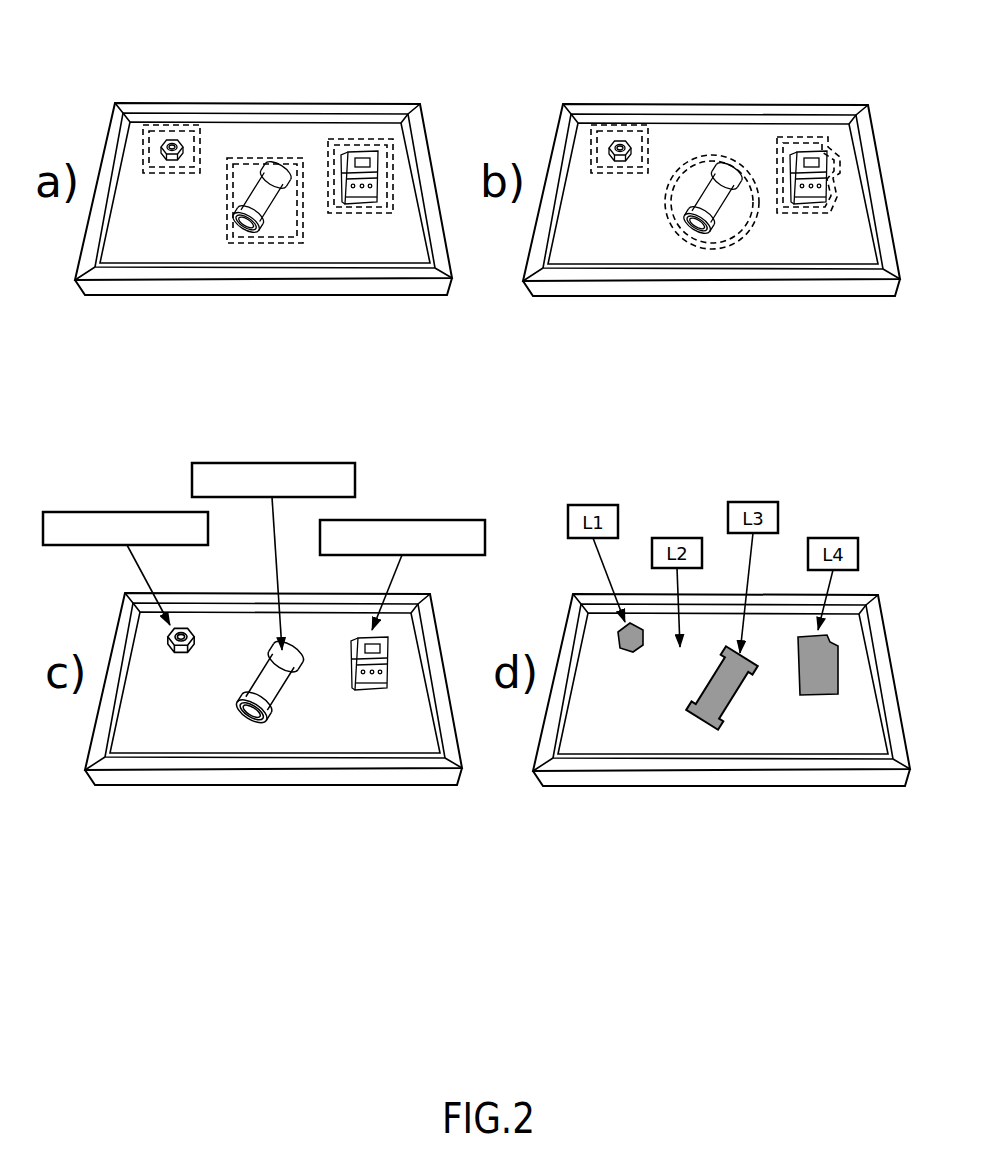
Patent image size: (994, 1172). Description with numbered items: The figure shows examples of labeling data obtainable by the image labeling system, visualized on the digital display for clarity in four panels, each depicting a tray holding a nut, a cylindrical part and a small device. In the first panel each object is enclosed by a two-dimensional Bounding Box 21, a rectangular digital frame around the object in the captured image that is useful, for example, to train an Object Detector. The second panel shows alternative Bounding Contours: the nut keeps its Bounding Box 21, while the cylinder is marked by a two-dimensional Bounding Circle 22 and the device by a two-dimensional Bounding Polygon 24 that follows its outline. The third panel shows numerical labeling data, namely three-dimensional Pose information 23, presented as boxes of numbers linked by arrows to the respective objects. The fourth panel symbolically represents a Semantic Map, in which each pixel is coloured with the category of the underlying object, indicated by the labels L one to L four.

The 2D Bounding Box 21 is at (203, 137).
The 2D Bounding Circle 22 is at (730, 155).
The 3D Pose information 23 is at (102, 512).
The 2D Bounding Polygon 24 is at (793, 137).